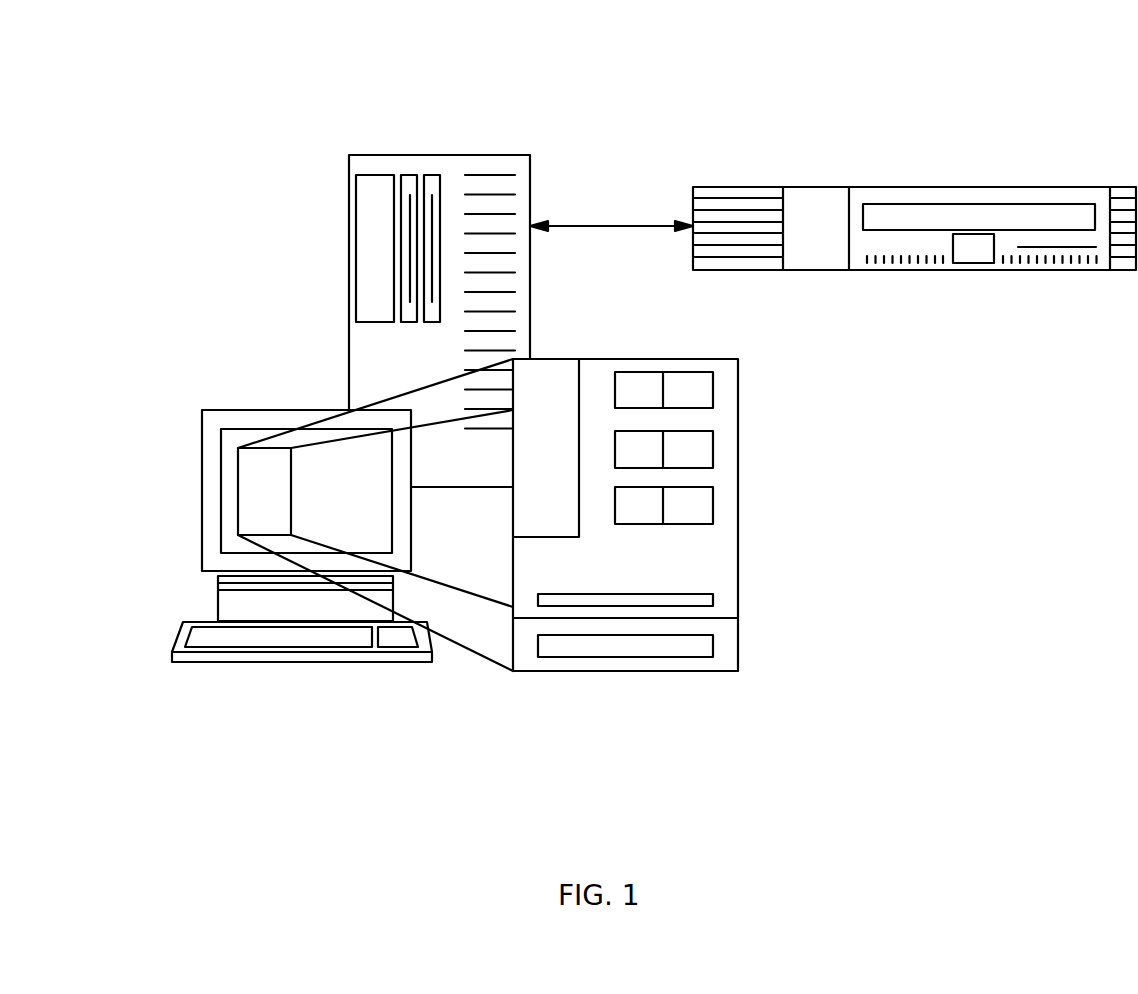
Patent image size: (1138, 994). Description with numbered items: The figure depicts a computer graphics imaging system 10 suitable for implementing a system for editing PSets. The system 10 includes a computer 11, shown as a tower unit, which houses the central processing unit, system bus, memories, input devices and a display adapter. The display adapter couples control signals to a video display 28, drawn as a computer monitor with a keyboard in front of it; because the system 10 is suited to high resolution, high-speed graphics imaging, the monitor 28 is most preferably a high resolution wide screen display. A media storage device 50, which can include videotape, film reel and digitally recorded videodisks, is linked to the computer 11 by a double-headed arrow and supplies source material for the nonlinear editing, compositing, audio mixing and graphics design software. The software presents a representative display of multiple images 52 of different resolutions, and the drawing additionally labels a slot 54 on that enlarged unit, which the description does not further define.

The computer graphics imaging system 10 is at (610, 86).
The computer 11 is at (418, 155).
The video display 28 is at (202, 506).
The media storage device 50 is at (888, 186).
The images 52 is at (660, 534).
The drive slot 54 is at (585, 652).